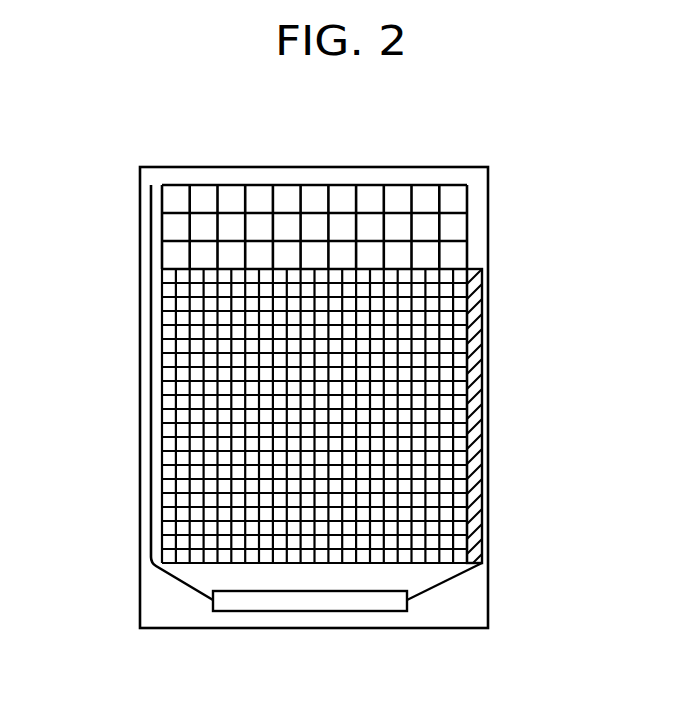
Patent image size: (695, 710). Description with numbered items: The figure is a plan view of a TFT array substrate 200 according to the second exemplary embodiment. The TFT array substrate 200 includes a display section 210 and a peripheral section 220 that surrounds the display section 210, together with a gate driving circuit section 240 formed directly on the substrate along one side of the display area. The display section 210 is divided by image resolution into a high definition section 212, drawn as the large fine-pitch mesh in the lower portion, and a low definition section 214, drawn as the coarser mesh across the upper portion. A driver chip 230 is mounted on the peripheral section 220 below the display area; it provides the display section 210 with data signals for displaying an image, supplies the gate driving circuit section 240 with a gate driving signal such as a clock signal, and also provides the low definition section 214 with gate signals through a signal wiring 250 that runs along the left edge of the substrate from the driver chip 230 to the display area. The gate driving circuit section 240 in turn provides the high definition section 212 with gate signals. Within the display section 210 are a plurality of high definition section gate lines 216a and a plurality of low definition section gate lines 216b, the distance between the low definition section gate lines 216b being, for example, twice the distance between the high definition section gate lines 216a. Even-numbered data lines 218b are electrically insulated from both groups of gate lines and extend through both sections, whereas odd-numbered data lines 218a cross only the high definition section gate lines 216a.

The TFT array substrate 200 is at (510, 160).
The display section 210 is at (78, 242).
The high definition section 212 is at (186, 344).
The low definition section 214 is at (186, 257).
The high definition section gate lines 216a is at (440, 434).
The low definition section gate lines 216b is at (447, 245).
The odd-numbered data lines 218a is at (430, 417).
The even-numbered data lines 218b is at (440, 227).
The peripheral section 220 is at (150, 598).
The driver chip 230 is at (313, 600).
The gate driving circuit section 240 is at (480, 362).
The signal wiring 250 is at (150, 421).